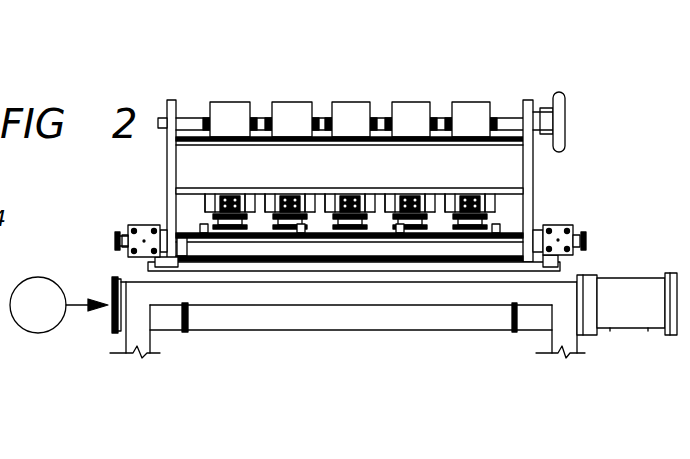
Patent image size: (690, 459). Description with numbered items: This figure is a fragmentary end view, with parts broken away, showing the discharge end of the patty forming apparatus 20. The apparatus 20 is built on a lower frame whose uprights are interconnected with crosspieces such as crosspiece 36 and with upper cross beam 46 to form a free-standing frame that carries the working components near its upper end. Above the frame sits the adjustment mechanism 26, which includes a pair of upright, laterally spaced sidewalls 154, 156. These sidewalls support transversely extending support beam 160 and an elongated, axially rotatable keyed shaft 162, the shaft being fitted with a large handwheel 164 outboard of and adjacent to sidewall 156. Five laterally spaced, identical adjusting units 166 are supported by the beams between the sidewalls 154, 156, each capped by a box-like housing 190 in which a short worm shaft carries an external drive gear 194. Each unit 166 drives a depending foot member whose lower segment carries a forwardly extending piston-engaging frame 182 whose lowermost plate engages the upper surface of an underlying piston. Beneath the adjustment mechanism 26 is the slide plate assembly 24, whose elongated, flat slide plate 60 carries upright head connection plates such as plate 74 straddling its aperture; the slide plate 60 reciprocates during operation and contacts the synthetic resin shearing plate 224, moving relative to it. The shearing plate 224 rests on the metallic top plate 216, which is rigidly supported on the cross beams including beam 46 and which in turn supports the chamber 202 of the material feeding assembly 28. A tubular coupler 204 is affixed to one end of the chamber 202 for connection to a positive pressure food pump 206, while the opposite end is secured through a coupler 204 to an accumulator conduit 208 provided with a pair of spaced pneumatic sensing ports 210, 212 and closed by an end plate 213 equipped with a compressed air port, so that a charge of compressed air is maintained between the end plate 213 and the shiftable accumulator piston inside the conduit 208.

The patty forming apparatus 20 is at (158, 87).
The slide plate assembly 24 is at (185, 217).
The adjustment mechanism 26 is at (533, 88).
The material feeding assembly 28 is at (500, 342).
The crosspiece 36 is at (161, 454).
The upper cross beam 46 is at (333, 333).
The slide plate 60 is at (343, 263).
The head connection plate 74 is at (448, 247).
The sidewall 154 is at (172, 217).
The sidewall 156 is at (535, 152).
The support beam 160 is at (505, 158).
The keyed shaft 162 is at (184, 118).
The handwheel 164 is at (563, 142).
The adjusting unit 166 is at (403, 95).
The piston-engaging frame 182 is at (282, 192).
The housing 190 is at (413, 103).
The drive gear 194 is at (323, 110).
The chamber 202 is at (293, 333).
The tubular coupler 204 is at (110, 331).
The food pump 206 is at (28, 288).
The accumulator conduit 208 is at (600, 277).
The pneumatic sensing port 210 is at (590, 337).
The pneumatic sensing port 212 is at (649, 331).
The end plate 213 is at (680, 273).
The top plate 216 is at (220, 278).
The shearing plate 224 is at (262, 268).